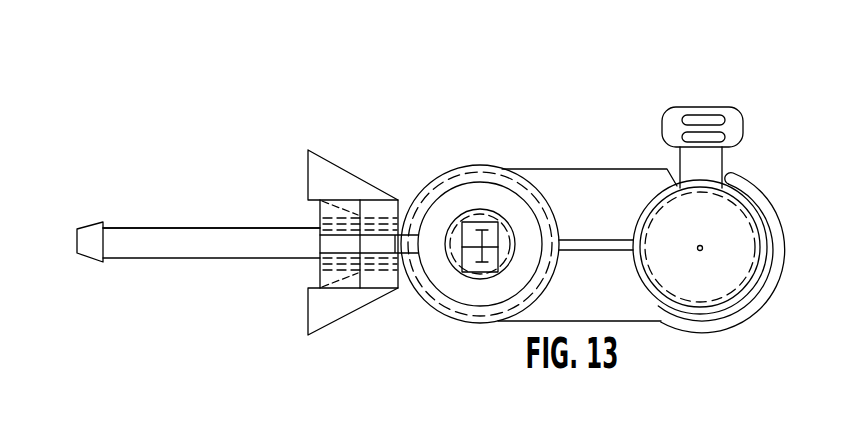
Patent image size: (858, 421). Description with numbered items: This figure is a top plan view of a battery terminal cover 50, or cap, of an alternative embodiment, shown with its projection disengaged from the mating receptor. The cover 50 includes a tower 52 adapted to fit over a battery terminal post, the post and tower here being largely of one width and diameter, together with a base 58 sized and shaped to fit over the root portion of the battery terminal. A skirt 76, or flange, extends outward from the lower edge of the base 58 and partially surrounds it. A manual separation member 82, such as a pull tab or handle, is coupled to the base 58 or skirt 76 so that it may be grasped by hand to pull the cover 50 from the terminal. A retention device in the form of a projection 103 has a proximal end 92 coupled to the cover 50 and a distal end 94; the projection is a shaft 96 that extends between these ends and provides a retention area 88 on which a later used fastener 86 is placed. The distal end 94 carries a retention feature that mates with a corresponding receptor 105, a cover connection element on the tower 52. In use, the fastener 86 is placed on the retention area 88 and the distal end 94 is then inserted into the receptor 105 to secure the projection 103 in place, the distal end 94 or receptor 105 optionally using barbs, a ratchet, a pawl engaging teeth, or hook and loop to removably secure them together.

The battery terminal cover 50 is at (587, 250).
The tower 52 is at (758, 223).
The base 58 is at (603, 201).
The skirt 76 is at (760, 294).
The manual separation member 82 is at (732, 114).
The fastener 86 is at (345, 176).
The retention area 88 is at (194, 248).
The proximal end 92 is at (408, 236).
The distal end 94 is at (88, 231).
The shaft 96 is at (258, 241).
The projection 103 is at (188, 228).
The receptor 105 is at (492, 224).